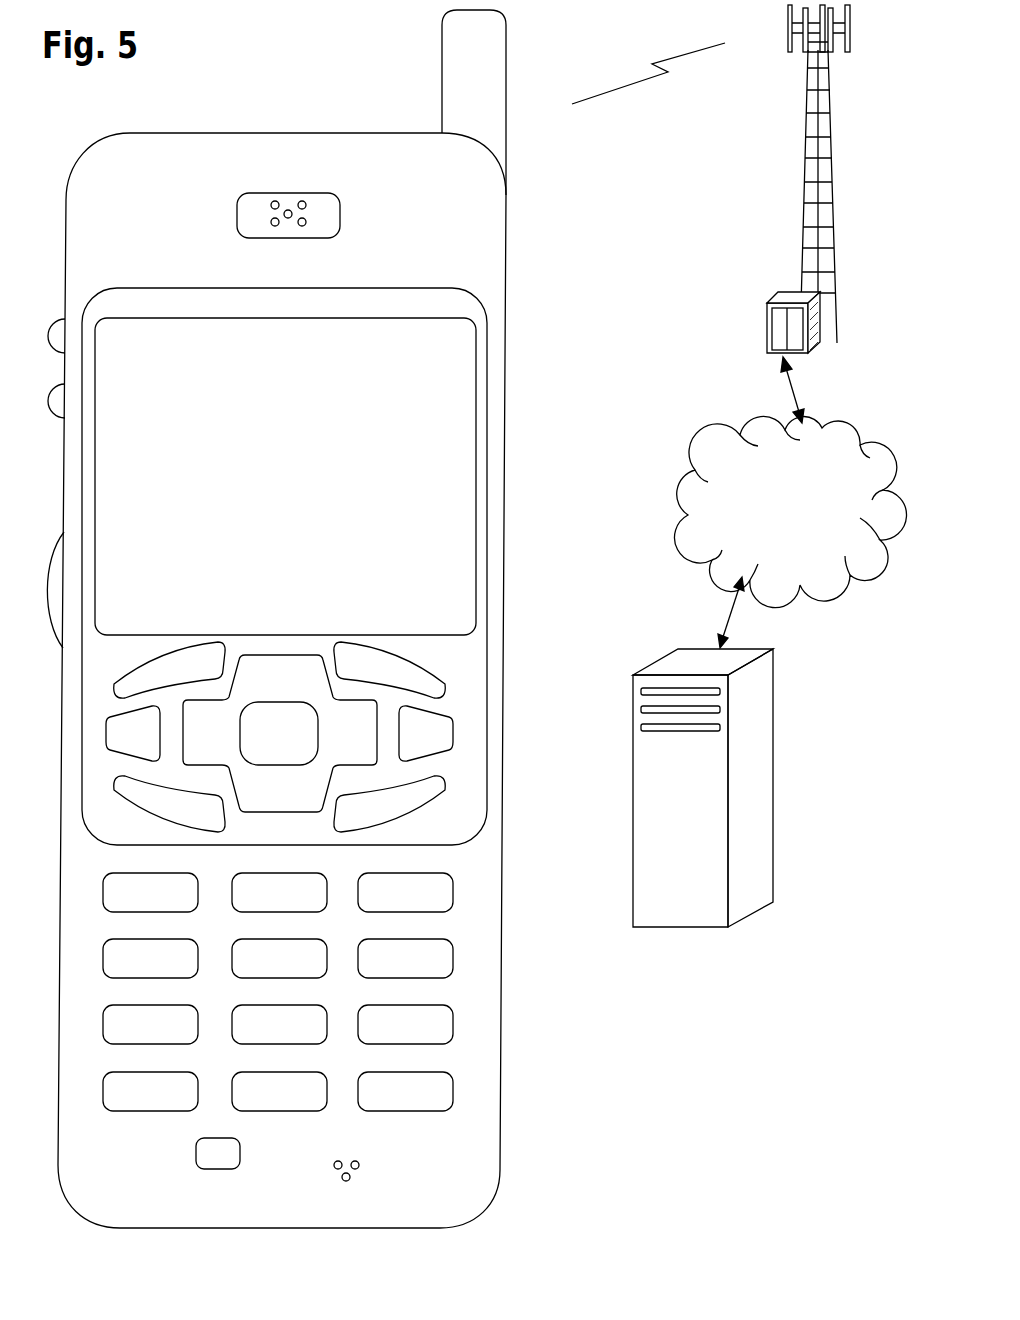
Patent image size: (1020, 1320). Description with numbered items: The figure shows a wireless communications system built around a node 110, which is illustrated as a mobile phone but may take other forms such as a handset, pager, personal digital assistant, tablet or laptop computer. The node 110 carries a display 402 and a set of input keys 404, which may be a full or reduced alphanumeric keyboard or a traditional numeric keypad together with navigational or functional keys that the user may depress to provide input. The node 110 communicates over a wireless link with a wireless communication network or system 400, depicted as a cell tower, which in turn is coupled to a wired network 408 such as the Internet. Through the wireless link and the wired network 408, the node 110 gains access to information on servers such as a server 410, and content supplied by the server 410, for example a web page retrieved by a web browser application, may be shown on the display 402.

The node 110 is at (314, 633).
The wireless communication network or system 400 is at (800, 196).
The display 402 is at (505, 334).
The input keys 404 is at (508, 645).
The wired network 408 is at (712, 556).
The server 410 is at (688, 929).